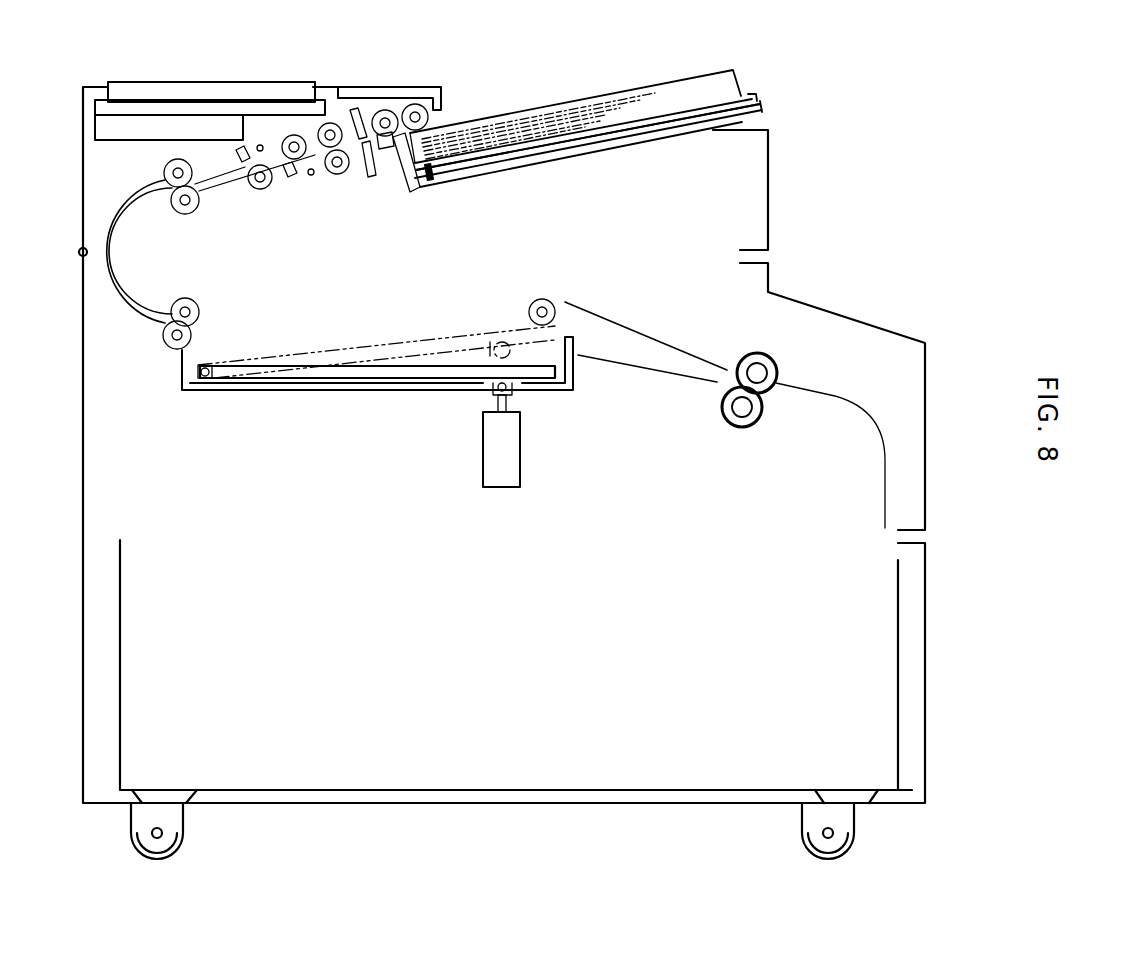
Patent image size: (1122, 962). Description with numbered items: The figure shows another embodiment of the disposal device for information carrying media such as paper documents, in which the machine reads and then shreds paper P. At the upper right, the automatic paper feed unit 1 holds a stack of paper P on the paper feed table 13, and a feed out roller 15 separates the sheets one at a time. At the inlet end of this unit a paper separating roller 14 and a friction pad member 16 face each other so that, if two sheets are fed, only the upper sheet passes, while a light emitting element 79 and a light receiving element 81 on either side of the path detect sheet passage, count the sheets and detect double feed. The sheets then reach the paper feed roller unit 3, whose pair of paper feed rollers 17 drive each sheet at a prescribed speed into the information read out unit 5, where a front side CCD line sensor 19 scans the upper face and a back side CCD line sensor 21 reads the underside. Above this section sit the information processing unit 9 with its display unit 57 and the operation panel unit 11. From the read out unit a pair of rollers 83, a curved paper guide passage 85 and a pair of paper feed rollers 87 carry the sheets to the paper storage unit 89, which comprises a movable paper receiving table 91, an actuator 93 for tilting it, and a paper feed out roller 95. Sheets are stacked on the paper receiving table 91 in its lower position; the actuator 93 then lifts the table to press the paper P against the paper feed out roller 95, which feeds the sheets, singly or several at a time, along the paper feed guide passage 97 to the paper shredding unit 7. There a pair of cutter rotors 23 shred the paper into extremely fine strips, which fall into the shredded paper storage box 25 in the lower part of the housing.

The automatic paper feed unit 1 is at (619, 85).
The paper feed roller unit 3 is at (333, 115).
The information read out unit 5 is at (275, 135).
The paper shredding unit 7 is at (728, 434).
The information processing unit 9 is at (142, 125).
The operation panel unit 11 is at (399, 68).
The paper feed table 13 is at (668, 115).
The paper separating roller 14 is at (386, 110).
The feed out roller 15 is at (428, 120).
The friction pad member 16 is at (388, 150).
The paper feed rollers 17 is at (341, 178).
The CCD line sensor for the front side 19 is at (252, 143).
The CCD line sensor for the back side 21 is at (303, 185).
The cutter rotors 23 is at (760, 420).
The shredded paper storage box 25 is at (898, 652).
The display unit 57 is at (184, 82).
The light emitting element 79 is at (358, 117).
The light receiving element 81 is at (372, 178).
The pair of rollers 83 is at (186, 214).
The paper guide passage 85 is at (135, 307).
The pair of paper feed rollers 87 is at (192, 336).
The paper storage unit 89 is at (393, 340).
The paper receiving table 91 is at (376, 380).
The actuator 93 is at (508, 437).
The paper feed out roller 95 is at (543, 298).
The paper feed guide passage 97 is at (670, 350).
The paper P is at (575, 103).